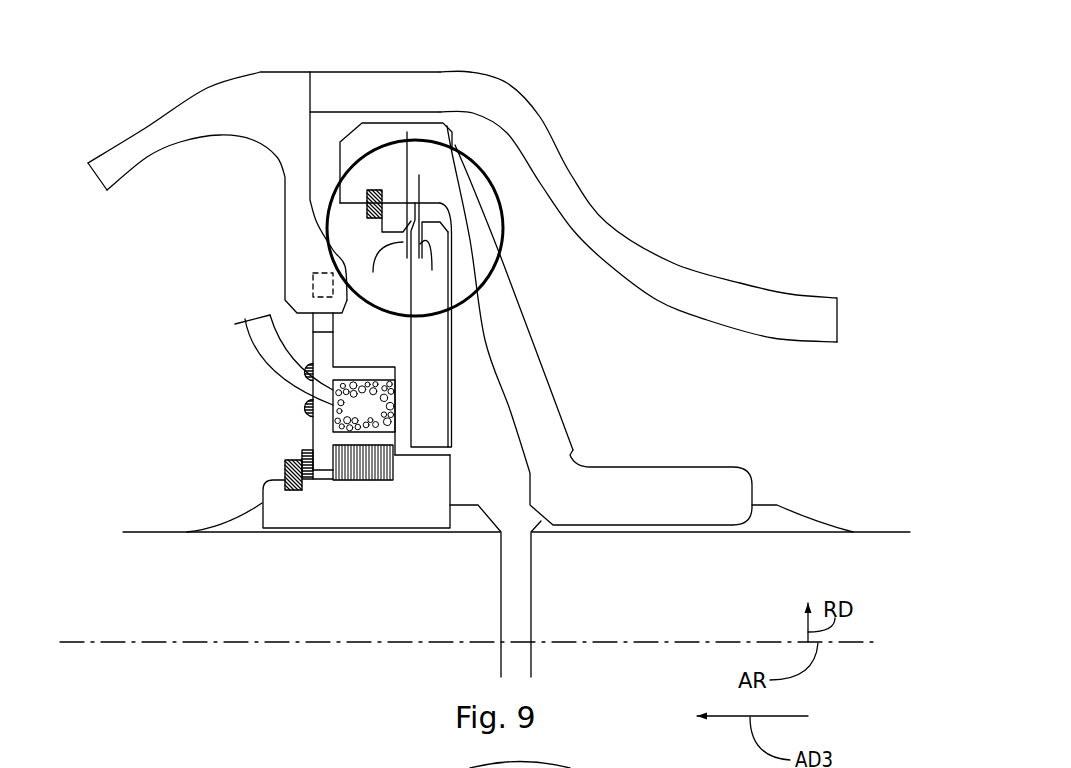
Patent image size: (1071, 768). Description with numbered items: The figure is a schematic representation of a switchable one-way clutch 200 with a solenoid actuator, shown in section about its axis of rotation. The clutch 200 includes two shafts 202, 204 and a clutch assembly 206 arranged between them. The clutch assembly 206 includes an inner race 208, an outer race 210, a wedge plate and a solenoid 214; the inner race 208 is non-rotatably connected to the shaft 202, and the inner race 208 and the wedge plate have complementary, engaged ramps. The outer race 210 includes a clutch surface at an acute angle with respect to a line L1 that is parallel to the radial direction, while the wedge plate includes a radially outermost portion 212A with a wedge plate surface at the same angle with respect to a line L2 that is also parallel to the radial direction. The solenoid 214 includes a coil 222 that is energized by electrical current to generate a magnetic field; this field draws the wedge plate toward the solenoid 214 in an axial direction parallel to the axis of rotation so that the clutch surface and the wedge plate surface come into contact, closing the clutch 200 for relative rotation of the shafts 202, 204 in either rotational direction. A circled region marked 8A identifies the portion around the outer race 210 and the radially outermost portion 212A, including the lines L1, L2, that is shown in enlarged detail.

The clutch 200 is at (672, 84).
The shaft 202 is at (138, 532).
The shaft 204 is at (880, 532).
The clutch assembly 206 is at (495, 165).
The inner race 208 is at (403, 483).
The outer race 210 is at (440, 248).
The radially outermost portion 212A is at (476, 252).
The solenoid 214 is at (283, 410).
The coil 222 is at (364, 406).
The detail view circle 8A is at (327, 213).
The line L1 is at (383, 269).
The line L2 is at (430, 273).